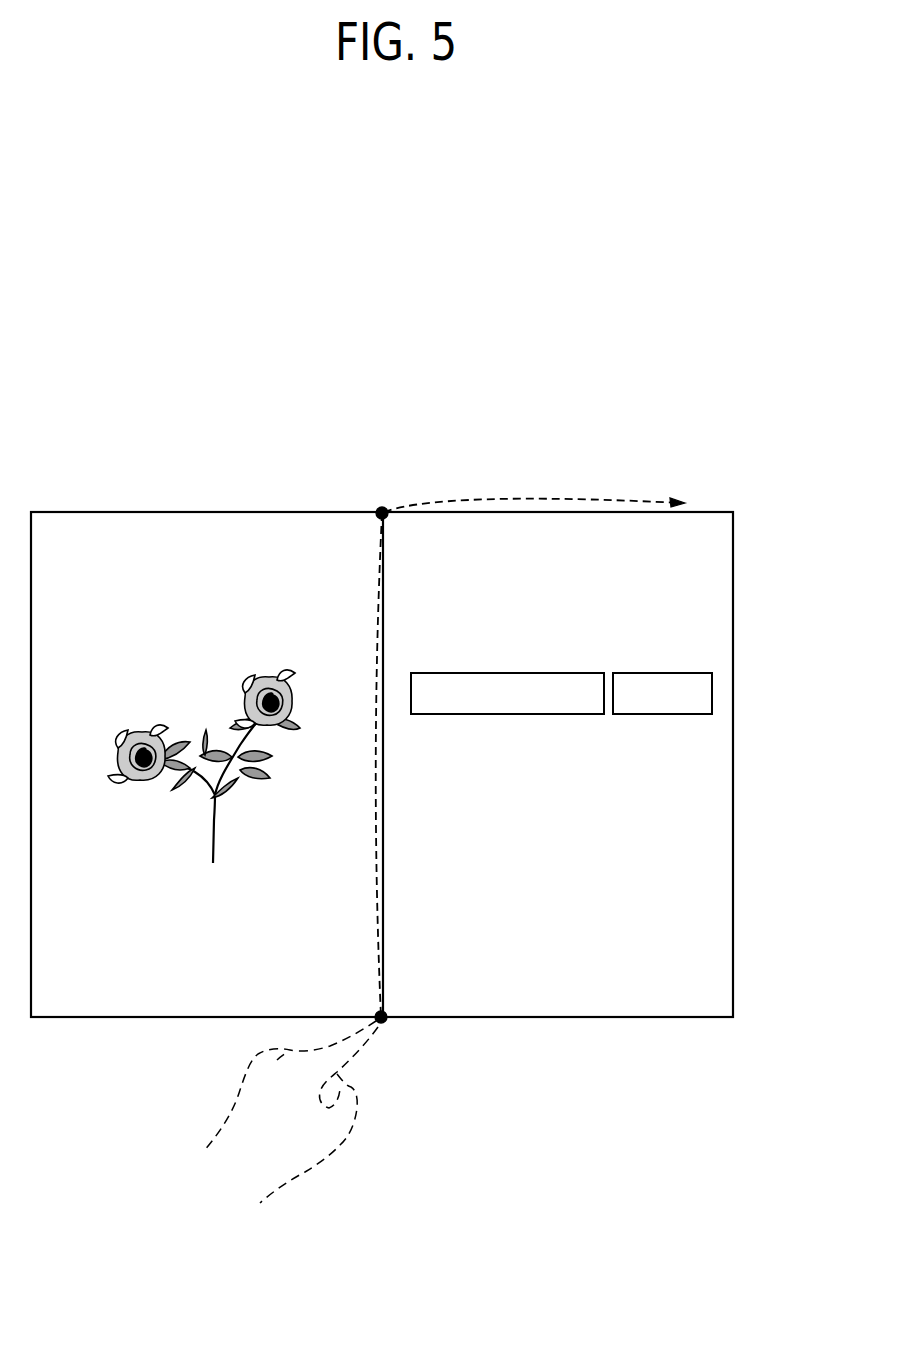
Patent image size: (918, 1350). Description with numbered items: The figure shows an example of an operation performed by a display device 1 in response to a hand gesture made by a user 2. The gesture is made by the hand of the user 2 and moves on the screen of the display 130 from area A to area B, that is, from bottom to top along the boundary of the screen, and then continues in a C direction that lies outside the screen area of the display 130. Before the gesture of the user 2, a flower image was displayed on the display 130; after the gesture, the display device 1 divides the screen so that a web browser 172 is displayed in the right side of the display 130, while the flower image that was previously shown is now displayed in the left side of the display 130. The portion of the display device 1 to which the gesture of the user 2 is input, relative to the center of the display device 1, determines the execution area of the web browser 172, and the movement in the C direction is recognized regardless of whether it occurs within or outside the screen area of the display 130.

The display device 1 is at (705, 507).
The user 2 is at (323, 1158).
The display 130 is at (734, 763).
The web browser 172 is at (385, 835).
The area A is at (387, 1020).
The area B is at (388, 516).
The C direction C is at (577, 488).